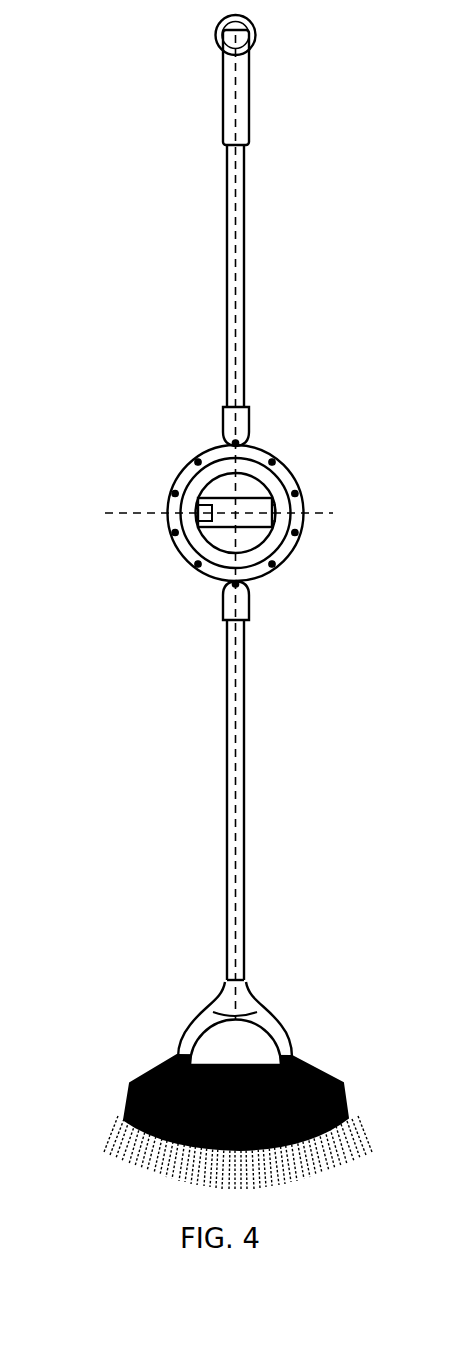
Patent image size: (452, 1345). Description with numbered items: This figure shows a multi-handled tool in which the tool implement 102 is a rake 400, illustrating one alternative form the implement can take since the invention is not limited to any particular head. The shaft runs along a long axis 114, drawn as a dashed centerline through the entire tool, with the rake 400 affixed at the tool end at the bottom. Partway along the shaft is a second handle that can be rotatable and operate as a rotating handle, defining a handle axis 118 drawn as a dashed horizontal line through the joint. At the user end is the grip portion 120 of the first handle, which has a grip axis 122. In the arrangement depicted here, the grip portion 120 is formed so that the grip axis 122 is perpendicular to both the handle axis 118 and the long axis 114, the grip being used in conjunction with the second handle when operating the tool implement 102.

The grip portion 120 is at (223, 121).
The grip axis 122 is at (237, 33).
The long axis 114 is at (237, 705).
The handle axis 118 is at (322, 515).
The tool implement 102 is at (131, 1089).
The rake 400 is at (338, 1078).